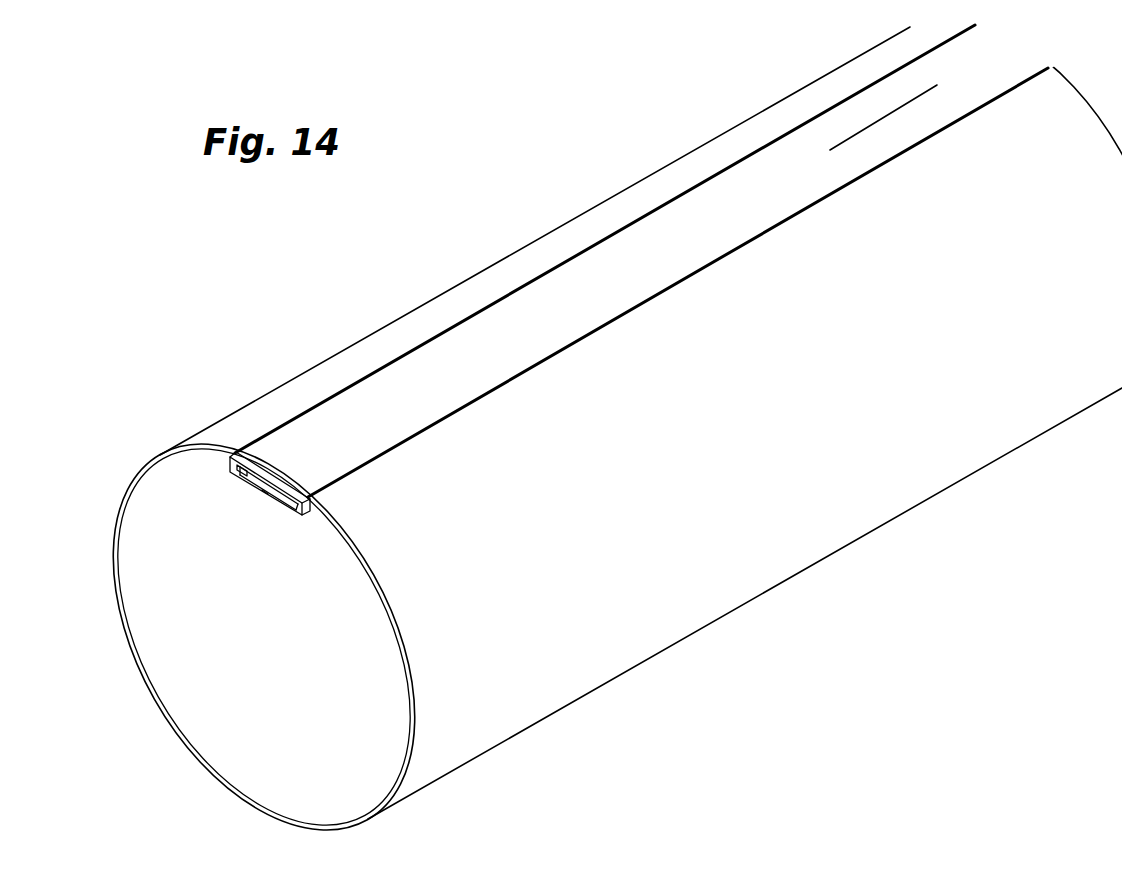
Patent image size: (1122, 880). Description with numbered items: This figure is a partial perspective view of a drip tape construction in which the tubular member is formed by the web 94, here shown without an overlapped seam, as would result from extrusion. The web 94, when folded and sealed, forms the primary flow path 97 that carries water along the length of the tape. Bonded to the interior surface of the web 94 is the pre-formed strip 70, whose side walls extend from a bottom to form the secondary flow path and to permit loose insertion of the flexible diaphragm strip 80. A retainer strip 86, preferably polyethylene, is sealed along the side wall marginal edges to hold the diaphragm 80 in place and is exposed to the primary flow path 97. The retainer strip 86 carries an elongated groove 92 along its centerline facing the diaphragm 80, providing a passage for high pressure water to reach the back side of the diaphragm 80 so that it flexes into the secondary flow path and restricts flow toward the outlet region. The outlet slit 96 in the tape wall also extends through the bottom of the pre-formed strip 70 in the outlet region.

The pre-formed strip 70 is at (213, 524).
The flexible diaphragm strip 80 is at (237, 532).
The retainer strip 86 is at (278, 510).
The elongated groove 92 is at (266, 496).
The web 94 is at (623, 648).
The outlet slit 96 is at (925, 90).
The primary flow path 97 is at (244, 699).